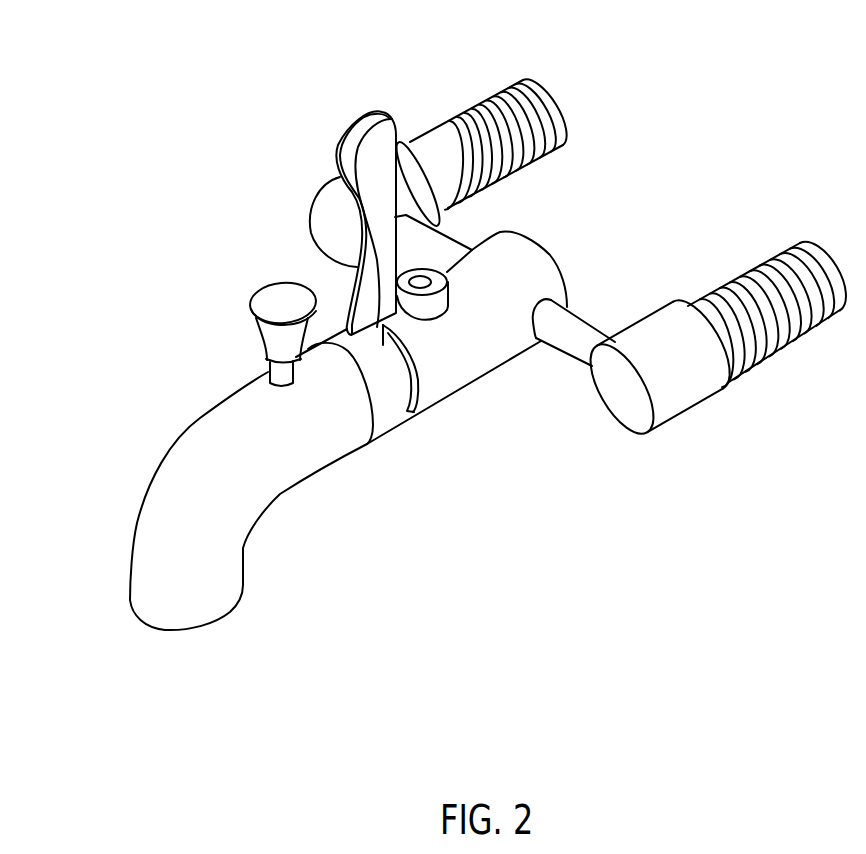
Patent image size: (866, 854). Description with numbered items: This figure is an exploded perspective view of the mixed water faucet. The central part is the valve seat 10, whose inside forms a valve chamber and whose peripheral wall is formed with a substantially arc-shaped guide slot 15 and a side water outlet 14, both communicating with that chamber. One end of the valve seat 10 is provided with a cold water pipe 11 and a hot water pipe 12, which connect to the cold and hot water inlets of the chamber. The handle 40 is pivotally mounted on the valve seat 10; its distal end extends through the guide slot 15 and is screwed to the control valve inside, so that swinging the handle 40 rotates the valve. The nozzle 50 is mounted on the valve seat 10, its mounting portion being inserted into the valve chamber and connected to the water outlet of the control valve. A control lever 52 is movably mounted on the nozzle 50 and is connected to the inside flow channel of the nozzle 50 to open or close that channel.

The valve seat 10 is at (520, 348).
The cold water pipe 11 is at (693, 393).
The hot water pipe 12 is at (452, 130).
The side water outlet 14 is at (423, 283).
The guide slot 15 is at (414, 392).
The handle 40 is at (334, 145).
The nozzle 50 is at (162, 461).
The control lever 52 is at (281, 307).